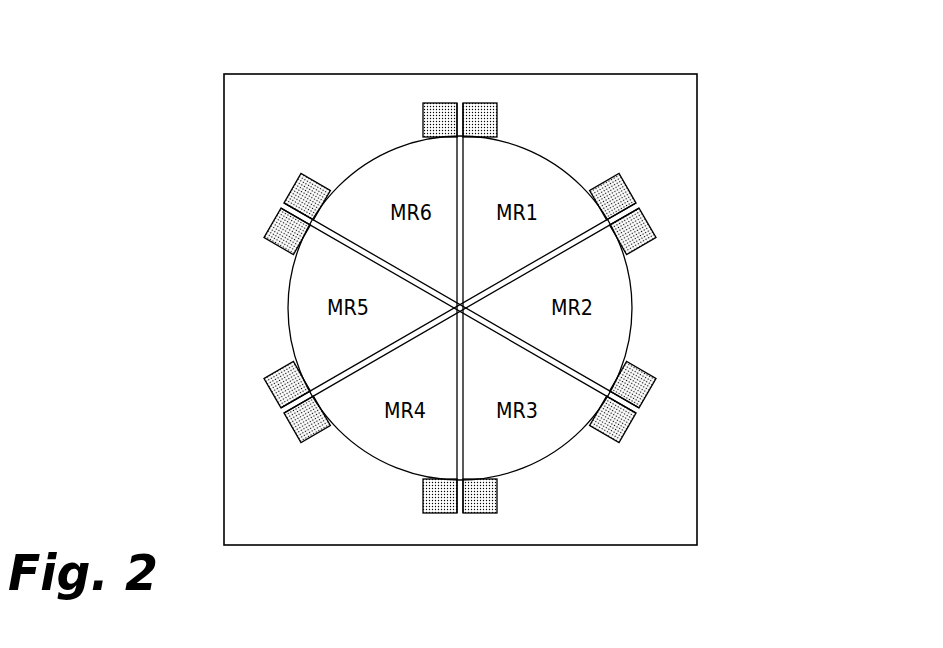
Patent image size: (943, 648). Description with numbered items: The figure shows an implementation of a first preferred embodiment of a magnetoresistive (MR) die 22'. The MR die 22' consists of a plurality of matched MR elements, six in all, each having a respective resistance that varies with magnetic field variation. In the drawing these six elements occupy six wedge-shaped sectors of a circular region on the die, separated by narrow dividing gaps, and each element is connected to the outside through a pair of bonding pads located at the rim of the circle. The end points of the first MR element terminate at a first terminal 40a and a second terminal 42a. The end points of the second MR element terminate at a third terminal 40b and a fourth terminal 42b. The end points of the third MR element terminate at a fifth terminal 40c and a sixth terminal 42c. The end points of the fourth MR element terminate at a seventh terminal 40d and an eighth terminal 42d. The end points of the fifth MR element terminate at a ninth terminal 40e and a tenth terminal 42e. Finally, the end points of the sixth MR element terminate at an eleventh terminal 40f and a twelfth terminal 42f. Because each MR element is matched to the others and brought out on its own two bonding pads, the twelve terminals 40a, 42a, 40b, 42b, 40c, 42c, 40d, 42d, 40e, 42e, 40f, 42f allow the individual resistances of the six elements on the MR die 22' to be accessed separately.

The MR die 22' is at (497, 274).
The first terminal (bonding pad) 40a is at (500, 110).
The third terminal (bonding pad) 40b is at (652, 218).
The fifth terminal (bonding pad) 40c is at (632, 428).
The seventh terminal (bonding pad) 40d is at (445, 515).
The ninth terminal (bonding pad) 40e is at (270, 386).
The eleventh terminal (bonding pad) 40f is at (297, 182).
The second terminal (bonding pad) 42a is at (632, 186).
The fourth terminal (bonding pad) 42b is at (648, 395).
The sixth terminal (bonding pad) 42c is at (483, 515).
The eighth terminal (bonding pad) 42d is at (296, 432).
The tenth terminal (bonding pad) 42e is at (275, 225).
The twelfth terminal (bonding pad) 42f is at (447, 103).